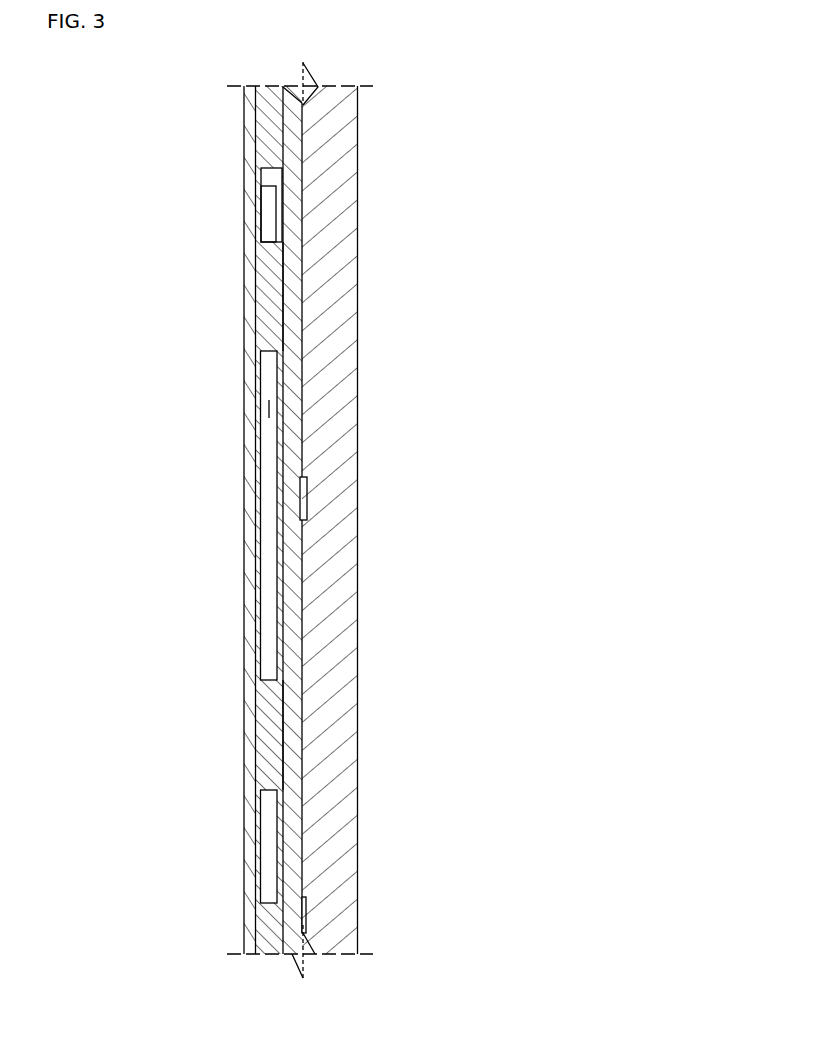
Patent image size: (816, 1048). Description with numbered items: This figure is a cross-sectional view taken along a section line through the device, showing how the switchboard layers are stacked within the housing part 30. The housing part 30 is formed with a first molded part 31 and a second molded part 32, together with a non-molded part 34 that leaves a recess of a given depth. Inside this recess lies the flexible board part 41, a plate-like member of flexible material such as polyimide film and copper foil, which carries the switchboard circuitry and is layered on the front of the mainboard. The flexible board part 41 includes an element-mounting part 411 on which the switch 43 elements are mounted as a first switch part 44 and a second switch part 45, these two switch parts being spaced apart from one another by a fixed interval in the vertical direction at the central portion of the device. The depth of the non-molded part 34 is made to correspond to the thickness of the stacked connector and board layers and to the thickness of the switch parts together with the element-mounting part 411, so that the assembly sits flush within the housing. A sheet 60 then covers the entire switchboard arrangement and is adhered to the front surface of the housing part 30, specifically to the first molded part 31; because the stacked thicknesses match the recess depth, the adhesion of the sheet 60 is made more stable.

The housing part 30 is at (358, 840).
The first molded part 31 is at (340, 138).
The second molded part 32 is at (273, 121).
The non-molded part 34 is at (271, 409).
The flexible board part 41 is at (285, 565).
The element-mounting part 411 is at (303, 705).
The switch 43 is at (262, 301).
The first switch part 44 is at (283, 283).
The second switch part 45 is at (283, 738).
The sheet 60 is at (244, 441).